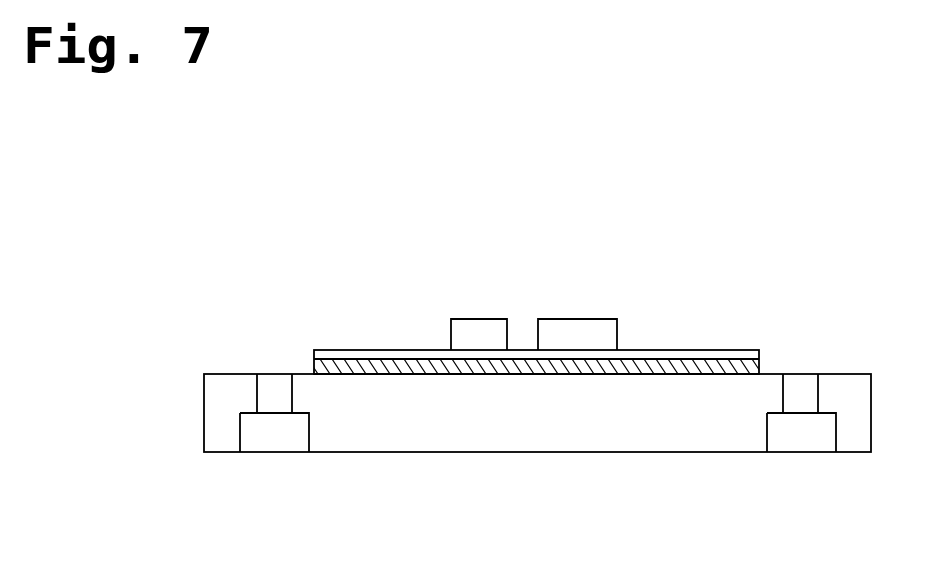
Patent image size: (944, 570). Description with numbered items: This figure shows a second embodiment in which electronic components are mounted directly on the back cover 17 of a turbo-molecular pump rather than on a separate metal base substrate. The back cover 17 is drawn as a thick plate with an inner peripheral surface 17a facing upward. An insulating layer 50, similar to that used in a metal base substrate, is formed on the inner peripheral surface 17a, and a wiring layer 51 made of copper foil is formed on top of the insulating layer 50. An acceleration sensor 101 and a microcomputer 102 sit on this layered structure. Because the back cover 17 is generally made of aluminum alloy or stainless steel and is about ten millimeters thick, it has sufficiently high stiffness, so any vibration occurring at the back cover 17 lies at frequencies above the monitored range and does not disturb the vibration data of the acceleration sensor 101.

The back cover 17 is at (509, 435).
The inner peripheral surface 17a is at (770, 373).
The insulating layer 50 is at (312, 366).
The wiring layer 51 is at (352, 357).
The acceleration sensor 101 is at (578, 333).
The microcomputer 102 is at (480, 332).